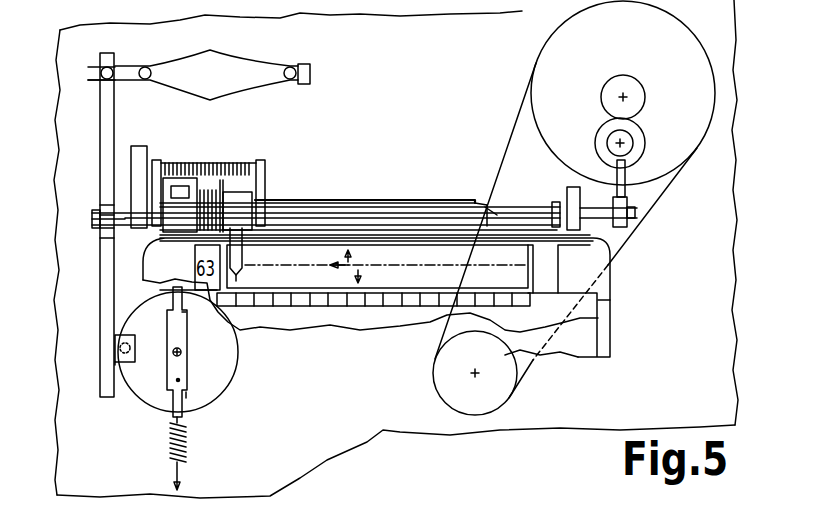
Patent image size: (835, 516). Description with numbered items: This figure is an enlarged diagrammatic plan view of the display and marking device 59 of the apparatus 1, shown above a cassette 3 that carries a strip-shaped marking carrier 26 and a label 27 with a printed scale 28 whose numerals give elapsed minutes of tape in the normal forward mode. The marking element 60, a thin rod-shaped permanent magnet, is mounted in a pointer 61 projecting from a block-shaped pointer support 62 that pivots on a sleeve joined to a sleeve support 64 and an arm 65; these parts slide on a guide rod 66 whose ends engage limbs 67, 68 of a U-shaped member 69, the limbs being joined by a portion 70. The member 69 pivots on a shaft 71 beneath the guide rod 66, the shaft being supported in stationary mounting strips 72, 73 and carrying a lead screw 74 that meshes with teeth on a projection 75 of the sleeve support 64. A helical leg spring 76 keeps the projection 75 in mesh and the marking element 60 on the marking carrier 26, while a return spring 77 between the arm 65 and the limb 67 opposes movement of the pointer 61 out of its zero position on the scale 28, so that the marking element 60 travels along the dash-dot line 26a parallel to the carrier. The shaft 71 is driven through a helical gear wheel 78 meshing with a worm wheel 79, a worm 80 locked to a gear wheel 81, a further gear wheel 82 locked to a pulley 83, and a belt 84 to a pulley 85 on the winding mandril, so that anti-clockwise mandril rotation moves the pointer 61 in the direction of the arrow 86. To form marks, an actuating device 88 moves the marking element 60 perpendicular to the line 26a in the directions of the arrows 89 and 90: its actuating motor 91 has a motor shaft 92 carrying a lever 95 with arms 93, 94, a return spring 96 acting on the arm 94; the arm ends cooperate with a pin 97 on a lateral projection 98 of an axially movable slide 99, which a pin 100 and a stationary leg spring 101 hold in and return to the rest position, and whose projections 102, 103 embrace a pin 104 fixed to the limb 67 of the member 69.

The apparatus 1 is at (383, 442).
The cassette 3 is at (615, 350).
The marking carrier 26 is at (520, 283).
The line 26a is at (507, 265).
The label 27 is at (596, 333).
The scale 28 is at (364, 308).
The display and marking device 59 is at (305, 162).
The marking element 60 is at (238, 270).
The pointer 61 is at (242, 255).
The pointer support 62 is at (248, 192).
The sleeve support 64 is at (166, 180).
The arm 65 is at (260, 162).
The guide rod 66 is at (297, 205).
The limb 67 is at (156, 162).
The limb 68 is at (553, 205).
The U-shaped member 69 is at (494, 212).
The portion 70 is at (372, 234).
The shaft 71 is at (497, 207).
The mounting strip 72 is at (139, 148).
The mounting strip 73 is at (571, 190).
The lead screw 74 is at (342, 200).
The projection 75 is at (200, 170).
The helical leg spring 76 is at (213, 170).
The return spring 77 is at (247, 170).
The helical gear wheel 78 is at (626, 226).
The worm wheel 79 is at (626, 172).
The worm 80 is at (633, 140).
The gear wheel 81 is at (636, 126).
The gear wheel 82 is at (636, 83).
The pulley 83 is at (674, 30).
The belt 84 is at (517, 128).
The pulley 85 is at (482, 408).
The arrow 86 is at (330, 265).
The actuating device 88 is at (115, 415).
The arrow 89 is at (350, 256).
The arrow 90 is at (361, 277).
The actuating motor 91 is at (236, 348).
The motor shaft 92 is at (181, 356).
The arm 93 is at (185, 315).
The arm 94 is at (186, 381).
The lever 95 is at (188, 398).
The return spring 96 is at (183, 462).
The pin 97 is at (130, 345).
The lateral projection 98 is at (120, 363).
The slide 99 is at (103, 285).
The pin 100 is at (92, 75).
The leg spring 101 is at (153, 68).
The projection 102 is at (108, 206).
The projection 103 is at (108, 237).
The pin 104 is at (92, 222).